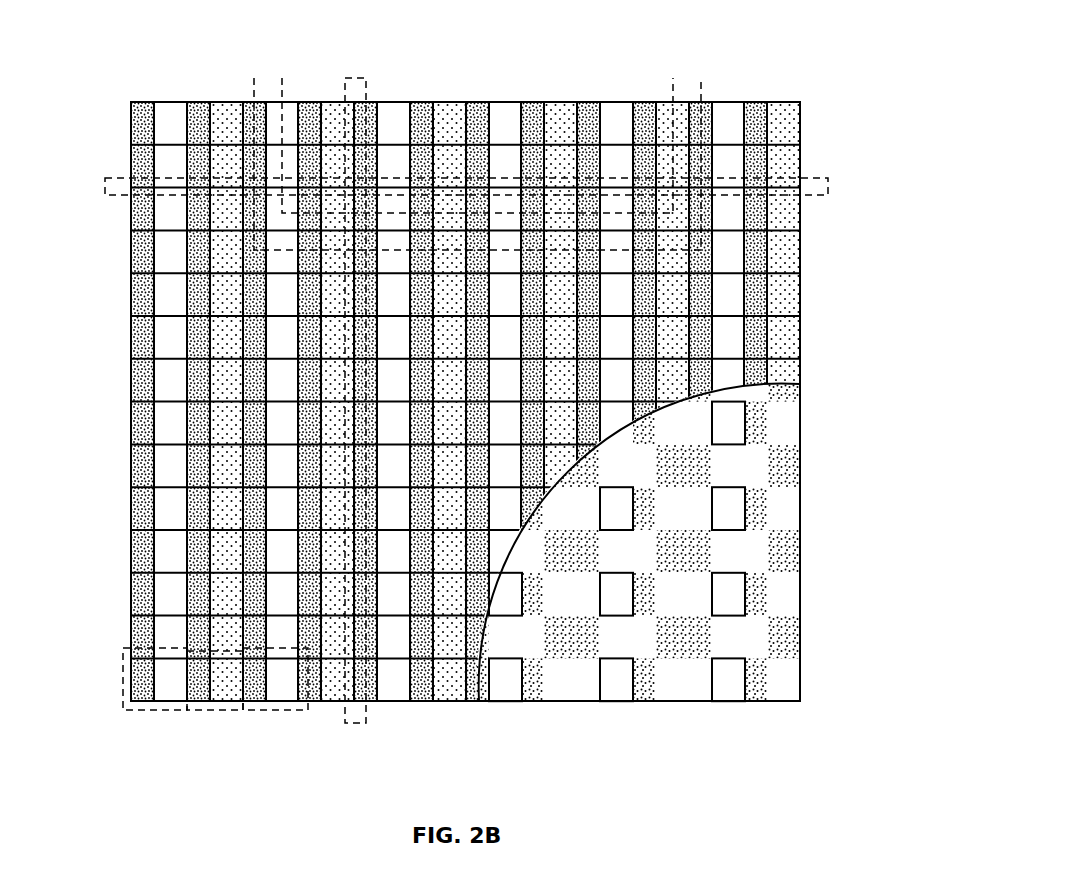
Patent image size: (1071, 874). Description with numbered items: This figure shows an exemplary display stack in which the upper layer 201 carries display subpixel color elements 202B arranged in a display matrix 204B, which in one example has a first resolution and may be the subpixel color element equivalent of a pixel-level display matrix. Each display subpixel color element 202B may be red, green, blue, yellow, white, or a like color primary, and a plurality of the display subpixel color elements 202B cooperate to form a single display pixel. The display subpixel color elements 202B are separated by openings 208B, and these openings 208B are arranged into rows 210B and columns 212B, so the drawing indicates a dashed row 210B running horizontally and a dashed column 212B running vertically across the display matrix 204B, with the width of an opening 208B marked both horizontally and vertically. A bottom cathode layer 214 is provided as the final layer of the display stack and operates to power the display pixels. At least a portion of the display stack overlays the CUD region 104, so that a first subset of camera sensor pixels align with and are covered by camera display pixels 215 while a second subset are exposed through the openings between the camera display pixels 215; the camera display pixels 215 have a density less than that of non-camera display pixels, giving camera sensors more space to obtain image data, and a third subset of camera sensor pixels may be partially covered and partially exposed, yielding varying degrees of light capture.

The display matrix 204B is at (524, 410).
The rows 210B is at (828, 191).
The columns 212B is at (363, 91).
The openings 208B is at (152, 94).
The camera display pixels 215 is at (452, 117).
The CUD region 104 is at (533, 117).
The upper layer 201 is at (423, 700).
The bottom cathode layer 214 is at (503, 700).
The display subpixel color elements 202B is at (163, 712).